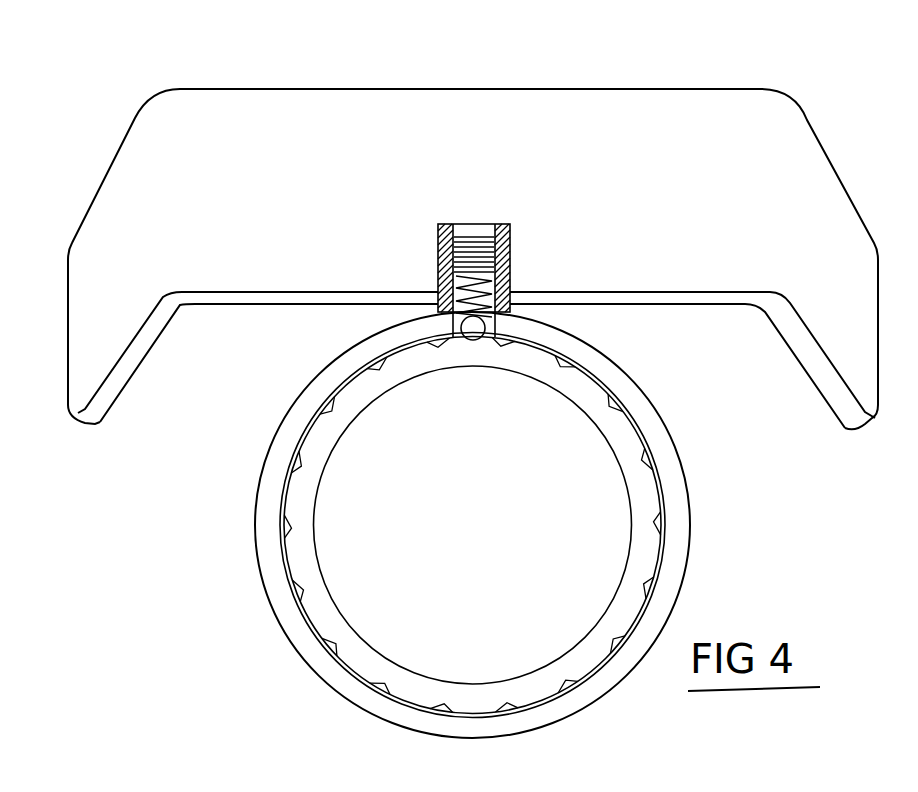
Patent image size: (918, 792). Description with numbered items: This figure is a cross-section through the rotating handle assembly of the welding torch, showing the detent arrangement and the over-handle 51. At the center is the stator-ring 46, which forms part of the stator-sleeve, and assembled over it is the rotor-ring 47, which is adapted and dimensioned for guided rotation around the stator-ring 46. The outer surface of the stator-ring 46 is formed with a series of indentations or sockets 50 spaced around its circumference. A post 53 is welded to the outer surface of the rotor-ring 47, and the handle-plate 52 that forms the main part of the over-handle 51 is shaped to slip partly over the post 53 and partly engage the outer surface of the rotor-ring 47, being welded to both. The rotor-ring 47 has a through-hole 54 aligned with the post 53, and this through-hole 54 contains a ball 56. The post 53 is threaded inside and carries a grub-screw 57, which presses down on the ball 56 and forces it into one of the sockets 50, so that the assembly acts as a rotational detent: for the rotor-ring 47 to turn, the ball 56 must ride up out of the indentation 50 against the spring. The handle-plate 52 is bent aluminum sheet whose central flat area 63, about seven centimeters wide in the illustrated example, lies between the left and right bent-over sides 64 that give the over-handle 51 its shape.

The stator-ring 46 is at (323, 617).
The rotor-ring 47 is at (267, 574).
The indentations or sockets 50 is at (643, 600).
The over-handle 51 is at (410, 143).
The handle-plate 52 is at (270, 118).
The post 53 is at (448, 263).
The through-hole 54 is at (450, 328).
The ball 56 is at (476, 330).
The grub-screw 57 is at (480, 260).
The central flat area 63 is at (533, 130).
The bent-over sides 64 is at (103, 220).